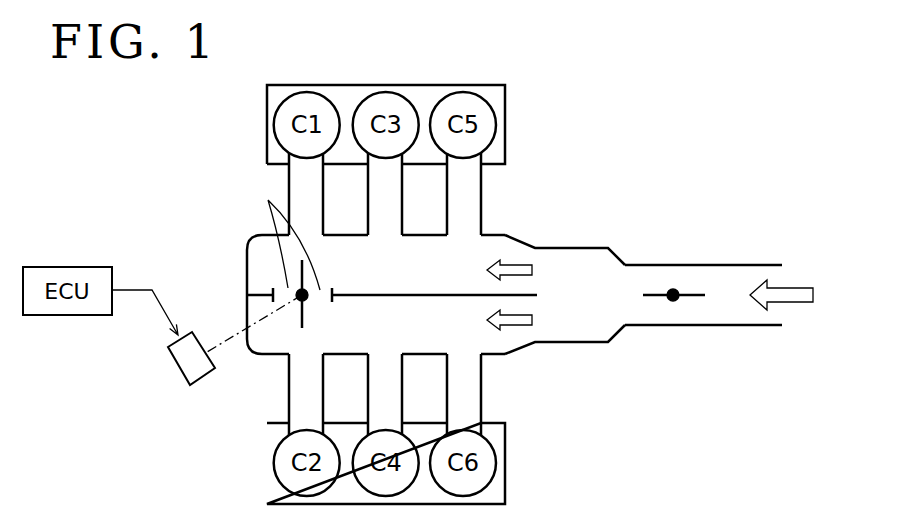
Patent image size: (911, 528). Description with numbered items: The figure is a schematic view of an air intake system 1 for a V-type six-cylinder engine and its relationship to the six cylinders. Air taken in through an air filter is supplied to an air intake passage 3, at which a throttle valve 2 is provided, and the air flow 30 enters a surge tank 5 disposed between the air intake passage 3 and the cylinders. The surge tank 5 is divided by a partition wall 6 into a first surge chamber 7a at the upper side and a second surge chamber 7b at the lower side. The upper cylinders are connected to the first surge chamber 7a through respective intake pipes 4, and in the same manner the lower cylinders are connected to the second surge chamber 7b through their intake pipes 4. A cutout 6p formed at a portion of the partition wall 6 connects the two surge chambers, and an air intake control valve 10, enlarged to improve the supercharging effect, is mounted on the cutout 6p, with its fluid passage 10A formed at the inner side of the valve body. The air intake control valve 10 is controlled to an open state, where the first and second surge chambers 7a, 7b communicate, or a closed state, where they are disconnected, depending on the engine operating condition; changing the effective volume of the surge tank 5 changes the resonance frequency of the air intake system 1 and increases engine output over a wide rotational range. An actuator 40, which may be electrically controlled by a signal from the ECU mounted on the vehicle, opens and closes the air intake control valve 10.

The air intake system 1 is at (581, 189).
The throttle valve 2 is at (692, 290).
The air intake passage 3 is at (738, 327).
The intake pipes 4 is at (482, 212).
The surge tank 5 is at (252, 238).
The partition wall 6 is at (508, 297).
The cutout 6p is at (276, 290).
The first surge chamber 7a is at (455, 279).
The second surge chamber 7b is at (455, 335).
The air intake control valve 10 is at (317, 320).
The fluid passage 10A is at (274, 231).
The intake air flow 30 is at (792, 287).
The actuator 40 is at (175, 363).